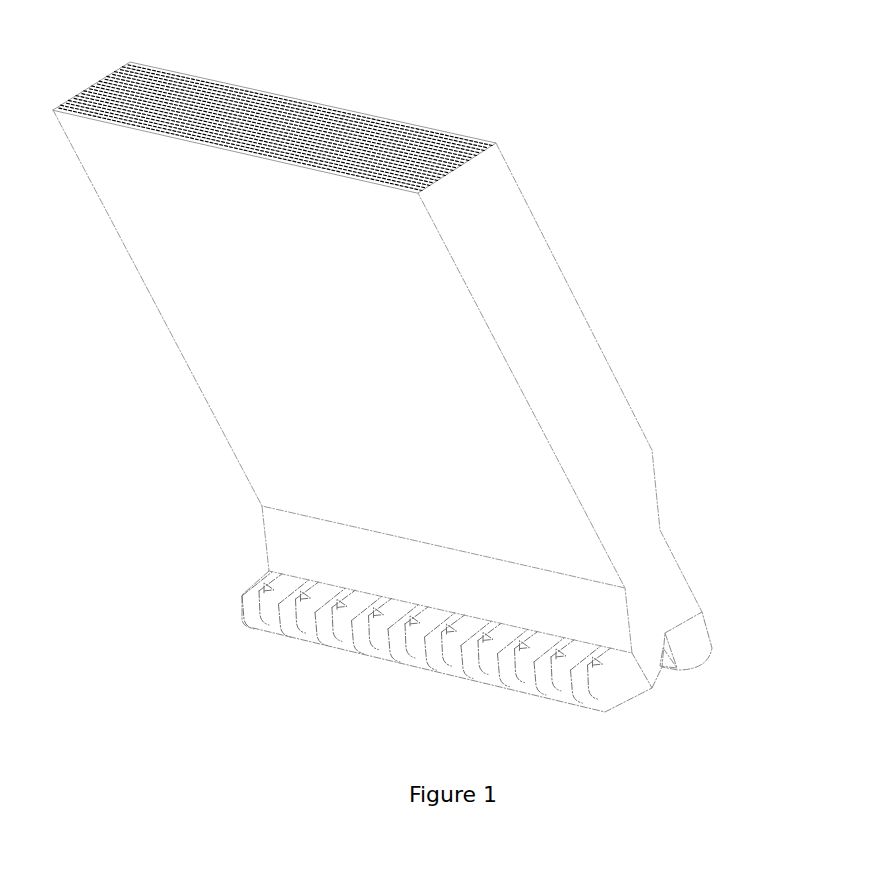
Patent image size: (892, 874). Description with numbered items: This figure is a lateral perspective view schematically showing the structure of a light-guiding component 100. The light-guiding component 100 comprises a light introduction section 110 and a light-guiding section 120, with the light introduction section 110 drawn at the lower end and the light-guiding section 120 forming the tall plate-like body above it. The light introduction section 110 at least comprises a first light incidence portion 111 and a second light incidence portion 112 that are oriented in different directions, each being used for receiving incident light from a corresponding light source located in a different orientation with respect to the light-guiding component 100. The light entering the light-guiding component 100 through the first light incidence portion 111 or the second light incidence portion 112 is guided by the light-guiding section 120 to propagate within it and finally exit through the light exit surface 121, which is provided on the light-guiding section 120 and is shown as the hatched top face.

The light-guiding component 100 is at (361, 25).
The light introduction section 110 is at (749, 612).
The first light incidence portion 111 is at (711, 628).
The second light incidence portion 112 is at (242, 590).
The light-guiding section 120 is at (678, 114).
The light exit surface 121 is at (413, 155).